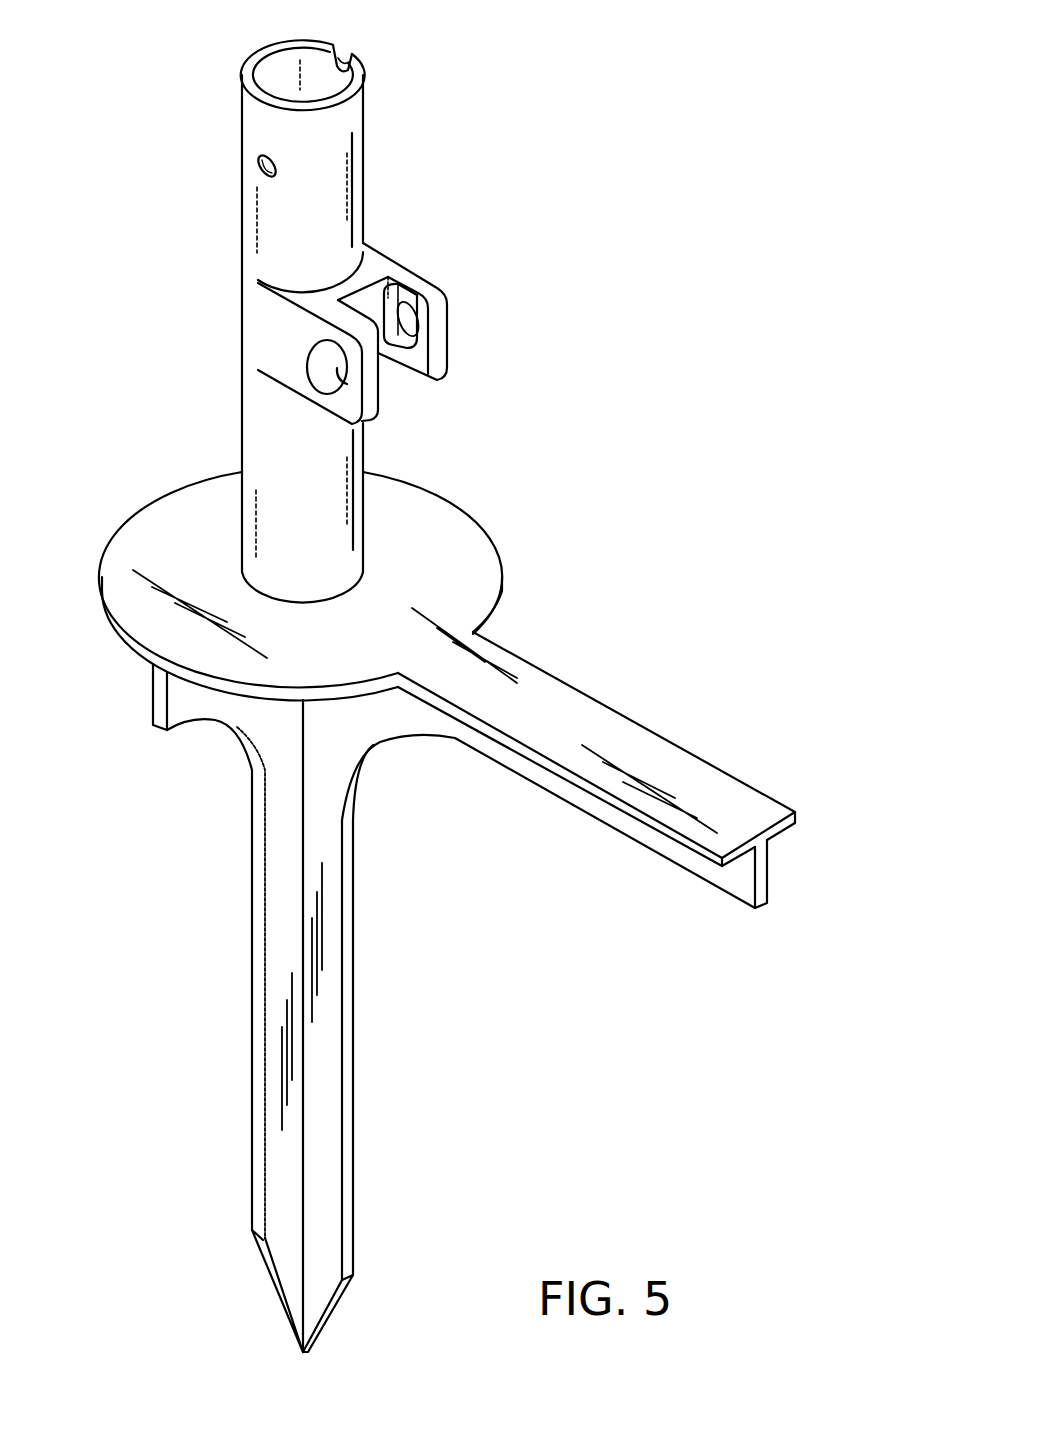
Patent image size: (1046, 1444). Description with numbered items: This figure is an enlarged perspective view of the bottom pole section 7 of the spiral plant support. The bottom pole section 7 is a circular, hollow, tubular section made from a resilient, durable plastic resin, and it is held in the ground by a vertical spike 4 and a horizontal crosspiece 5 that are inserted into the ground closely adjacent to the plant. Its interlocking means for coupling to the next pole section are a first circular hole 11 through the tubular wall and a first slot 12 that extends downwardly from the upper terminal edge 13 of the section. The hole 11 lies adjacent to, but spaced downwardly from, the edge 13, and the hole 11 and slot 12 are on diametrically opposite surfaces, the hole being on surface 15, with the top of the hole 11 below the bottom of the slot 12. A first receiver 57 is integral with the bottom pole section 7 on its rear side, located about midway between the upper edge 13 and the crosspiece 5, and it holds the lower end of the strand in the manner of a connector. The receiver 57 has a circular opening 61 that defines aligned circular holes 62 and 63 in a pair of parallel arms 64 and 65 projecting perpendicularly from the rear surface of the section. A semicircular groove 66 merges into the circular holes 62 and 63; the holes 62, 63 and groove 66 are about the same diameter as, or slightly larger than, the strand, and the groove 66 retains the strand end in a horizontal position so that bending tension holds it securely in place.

The vertical spike 4 is at (353, 1127).
The horizontal crosspiece 5 is at (717, 762).
The bottom pole section 7 is at (463, 676).
The first circular hole 11 is at (263, 177).
The first slot 12 is at (340, 50).
The upper terminal edge 13 is at (263, 53).
The surface 15 is at (263, 227).
The first receiver 57 is at (348, 353).
The circular opening 61 is at (311, 379).
The circular hole 62 is at (317, 353).
The circular hole 63 is at (402, 302).
The arm 64 is at (290, 358).
The arm 65 is at (458, 305).
The semicircular groove 66 is at (317, 355).